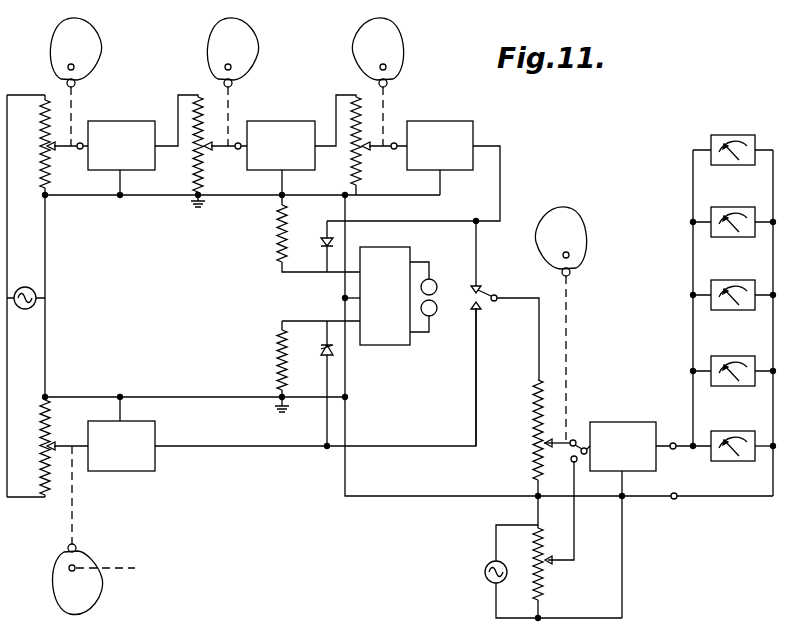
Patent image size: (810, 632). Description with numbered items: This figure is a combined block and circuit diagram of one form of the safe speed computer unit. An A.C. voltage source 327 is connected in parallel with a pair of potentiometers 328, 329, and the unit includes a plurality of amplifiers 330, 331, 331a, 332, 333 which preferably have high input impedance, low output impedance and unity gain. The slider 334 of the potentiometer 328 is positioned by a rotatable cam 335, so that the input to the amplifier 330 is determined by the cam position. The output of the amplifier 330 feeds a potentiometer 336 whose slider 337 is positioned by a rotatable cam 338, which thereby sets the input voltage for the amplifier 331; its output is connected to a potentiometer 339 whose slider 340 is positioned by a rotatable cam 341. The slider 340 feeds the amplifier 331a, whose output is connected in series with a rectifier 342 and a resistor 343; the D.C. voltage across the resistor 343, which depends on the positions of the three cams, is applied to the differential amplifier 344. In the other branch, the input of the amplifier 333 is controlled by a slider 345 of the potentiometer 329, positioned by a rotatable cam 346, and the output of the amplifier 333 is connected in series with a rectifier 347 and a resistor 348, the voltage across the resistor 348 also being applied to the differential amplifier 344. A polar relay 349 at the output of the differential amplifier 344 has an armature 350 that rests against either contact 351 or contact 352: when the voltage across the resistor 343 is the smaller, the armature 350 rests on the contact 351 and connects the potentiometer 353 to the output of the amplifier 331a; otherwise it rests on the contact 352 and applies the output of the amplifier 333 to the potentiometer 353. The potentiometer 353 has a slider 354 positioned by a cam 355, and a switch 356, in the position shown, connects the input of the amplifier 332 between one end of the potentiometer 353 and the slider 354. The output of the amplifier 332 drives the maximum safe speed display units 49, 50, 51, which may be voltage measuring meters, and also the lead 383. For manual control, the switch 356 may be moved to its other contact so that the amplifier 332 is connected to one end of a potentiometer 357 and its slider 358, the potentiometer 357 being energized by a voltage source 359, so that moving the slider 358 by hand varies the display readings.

The A.C. voltage source 327 is at (27, 287).
The potentiometer 328 is at (42, 158).
The potentiometer 329 is at (42, 450).
The amplifier 330 is at (118, 128).
The amplifier 331 is at (278, 128).
The amplifier 331a is at (448, 114).
The amplifier 332 is at (620, 426).
The amplifier 333 is at (157, 430).
The slider 334 is at (66, 150).
The rotatable cam 335 is at (98, 70).
The potentiometer 336 is at (198, 150).
The slider 337 is at (221, 150).
The rotatable cam 338 is at (248, 73).
The potentiometer 339 is at (356, 150).
The slider 340 is at (379, 150).
The rotatable cam 341 is at (400, 72).
The rectifier 342 is at (324, 242).
The resistor 343 is at (278, 242).
The differential amplifier 344 is at (385, 256).
The slider 345 is at (55, 444).
The rotatable cam 346 is at (88, 556).
The rectifier 347 is at (324, 353).
The resistor 348 is at (276, 363).
The polar relay 349 is at (435, 314).
The armature 350 is at (484, 292).
The contact 351 is at (470, 289).
The contact 352 is at (479, 306).
The potentiometer 353 is at (534, 414).
The slider 354 is at (562, 440).
The cam 355 is at (590, 262).
The switch 356 is at (577, 466).
The potentiometer 357 is at (544, 584).
The slider 358 is at (558, 562).
The voltage source 359 is at (484, 573).
The maximum safe speed display unit 49 is at (735, 422).
The maximum safe speed display unit 50 is at (735, 356).
The maximum safe speed display unit 51 is at (719, 134).
The lead 383 is at (157, 631).